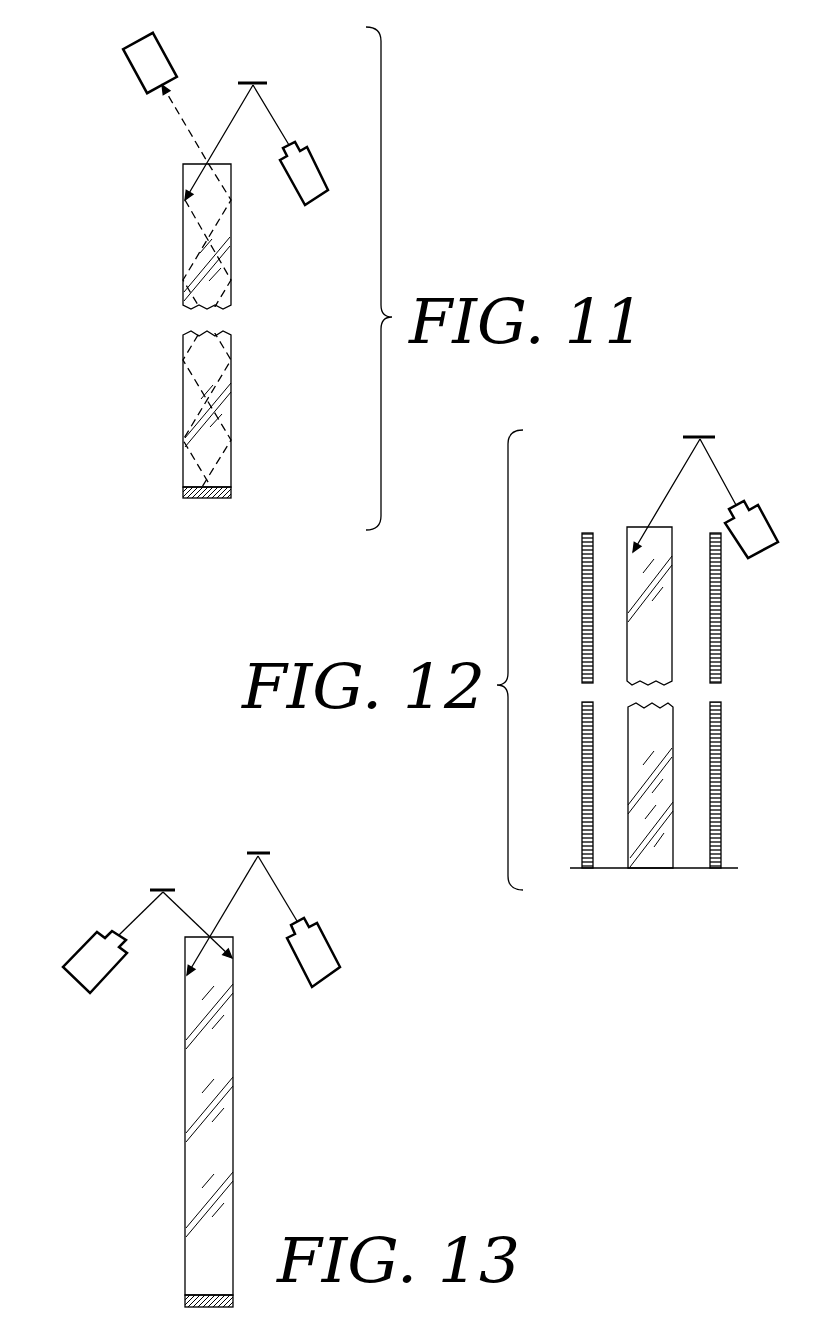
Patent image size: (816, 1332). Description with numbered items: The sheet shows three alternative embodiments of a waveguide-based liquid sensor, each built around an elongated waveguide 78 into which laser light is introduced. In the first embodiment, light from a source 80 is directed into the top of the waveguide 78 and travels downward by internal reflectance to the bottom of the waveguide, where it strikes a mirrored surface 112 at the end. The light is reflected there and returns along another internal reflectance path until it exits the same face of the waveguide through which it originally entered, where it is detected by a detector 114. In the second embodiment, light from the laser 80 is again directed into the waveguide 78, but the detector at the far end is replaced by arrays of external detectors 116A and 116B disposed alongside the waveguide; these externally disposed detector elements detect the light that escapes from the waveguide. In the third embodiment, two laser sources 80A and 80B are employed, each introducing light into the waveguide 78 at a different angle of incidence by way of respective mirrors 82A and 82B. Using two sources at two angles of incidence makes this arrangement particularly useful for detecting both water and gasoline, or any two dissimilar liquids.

In FIG. 11, the waveguide 78 is at (228, 268).
In FIG. 12, the waveguide 78 is at (652, 620).
In FIG. 13, the waveguide 78 is at (223, 1115).
In FIG. 11, the light source 80 is at (308, 168).
In FIG. 12, the light source 80 is at (770, 528).
In FIG. 13, the first laser source 80A is at (323, 943).
In FIG. 13, the second laser source 80B is at (95, 947).
In FIG. 13, the first mirror 82A is at (263, 852).
In FIG. 13, the second mirror 82B is at (157, 888).
In FIG. 11, the mirrored surface 112 is at (188, 482).
In FIG. 11, the detector 114 is at (160, 45).
In FIG. 12, the first array of external detectors 116A is at (581, 742).
In FIG. 12, the second array of external detectors 116B is at (722, 742).